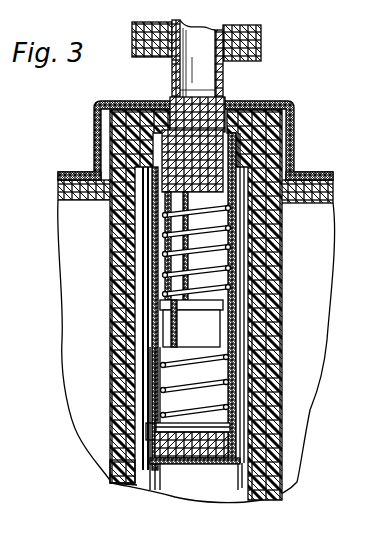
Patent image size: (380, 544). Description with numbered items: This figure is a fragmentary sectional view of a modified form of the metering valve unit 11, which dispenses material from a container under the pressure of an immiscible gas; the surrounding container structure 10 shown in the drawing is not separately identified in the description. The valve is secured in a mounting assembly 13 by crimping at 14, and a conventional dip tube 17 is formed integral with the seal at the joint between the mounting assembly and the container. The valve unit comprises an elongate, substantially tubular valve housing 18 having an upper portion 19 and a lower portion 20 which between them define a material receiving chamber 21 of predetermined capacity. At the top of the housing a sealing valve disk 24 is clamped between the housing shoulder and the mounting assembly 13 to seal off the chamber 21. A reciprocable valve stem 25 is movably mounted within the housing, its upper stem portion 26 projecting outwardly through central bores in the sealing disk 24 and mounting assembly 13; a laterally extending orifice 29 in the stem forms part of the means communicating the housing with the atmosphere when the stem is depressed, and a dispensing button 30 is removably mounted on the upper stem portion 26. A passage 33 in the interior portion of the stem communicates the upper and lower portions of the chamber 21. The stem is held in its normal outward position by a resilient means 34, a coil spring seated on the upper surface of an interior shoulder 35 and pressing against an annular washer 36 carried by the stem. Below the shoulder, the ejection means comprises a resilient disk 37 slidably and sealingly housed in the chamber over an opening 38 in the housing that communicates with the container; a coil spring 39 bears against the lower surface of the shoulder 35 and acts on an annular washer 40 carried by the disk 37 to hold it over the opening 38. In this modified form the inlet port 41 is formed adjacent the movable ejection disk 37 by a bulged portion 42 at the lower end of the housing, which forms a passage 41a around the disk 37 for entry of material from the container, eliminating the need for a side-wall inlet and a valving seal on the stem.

The housing 10 is at (335, 178).
The metering valve unit 11 is at (228, 88).
The mounting assembly 13 is at (290, 165).
The crimping 14 is at (97, 135).
The dip tube 17 is at (265, 365).
The valve housing 18 is at (240, 334).
The upper portion of valve housing 19 is at (240, 233).
The lower portion of valve housing 20 is at (140, 386).
The material receiving chamber 21 is at (262, 398).
The sealing valve disk 24 is at (294, 112).
The reciprocable valve stem 25 is at (225, 103).
The upper stem portion 26 is at (175, 67).
The laterally extending orifice 29 is at (185, 90).
The dispensing button 30 is at (257, 44).
The passage 33 is at (182, 184).
The resilient means 34 is at (240, 272).
The shoulder 35 is at (222, 318).
The annular washer 36 is at (266, 5).
The resilient disk 37 is at (207, 458).
The opening 38 is at (190, 494).
The coil spring 39 is at (233, 421).
The annular washer 40 is at (232, 436).
The inlet port 41 is at (115, 462).
The passage 41a is at (124, 486).
The bulged portion 42 is at (150, 430).